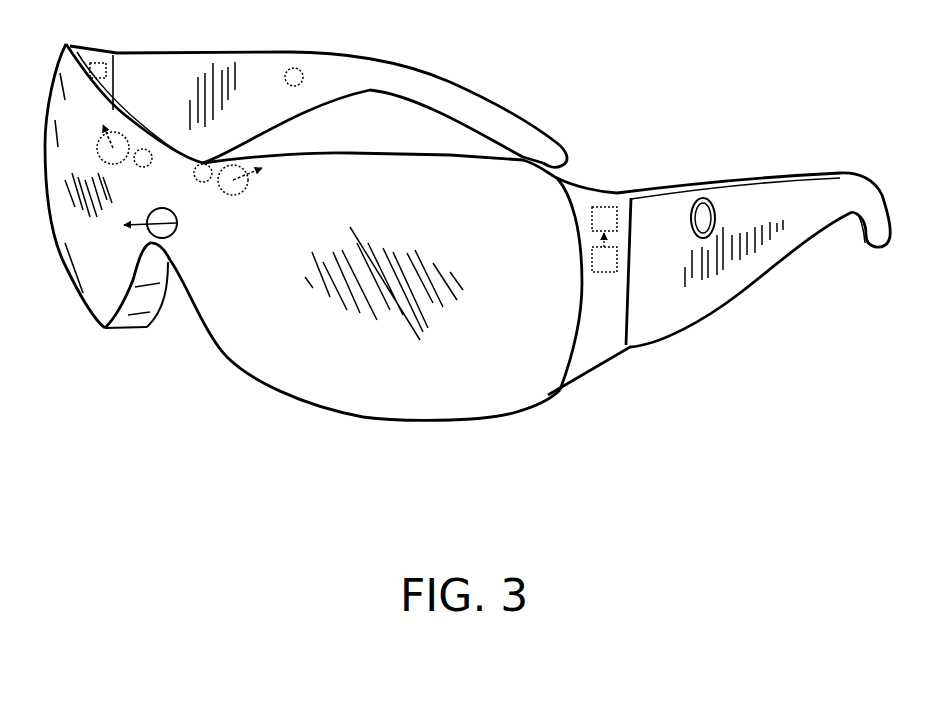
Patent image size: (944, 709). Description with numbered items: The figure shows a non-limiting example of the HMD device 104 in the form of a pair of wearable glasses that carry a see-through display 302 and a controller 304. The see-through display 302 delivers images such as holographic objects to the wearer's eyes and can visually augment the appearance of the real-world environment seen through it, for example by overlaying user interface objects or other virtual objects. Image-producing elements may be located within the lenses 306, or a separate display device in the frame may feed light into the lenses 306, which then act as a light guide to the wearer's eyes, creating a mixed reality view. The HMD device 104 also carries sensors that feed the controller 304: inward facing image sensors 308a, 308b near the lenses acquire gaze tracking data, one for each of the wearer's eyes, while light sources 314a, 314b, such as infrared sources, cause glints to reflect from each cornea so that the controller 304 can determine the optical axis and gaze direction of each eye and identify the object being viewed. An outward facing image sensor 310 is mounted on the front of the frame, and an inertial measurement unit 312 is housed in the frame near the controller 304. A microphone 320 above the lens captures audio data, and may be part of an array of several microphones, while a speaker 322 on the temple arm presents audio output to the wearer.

The HMD device 104 is at (506, 40).
The see-through display 302 is at (260, 355).
The controller 304 is at (605, 205).
The lenses 306 is at (138, 300).
The inward facing image sensor 308a is at (241, 194).
The inward facing image sensor 308b is at (119, 161).
The outward facing image sensor 310 is at (177, 223).
The inertial measurement unit 312 is at (617, 258).
The light source 314a is at (203, 163).
The light source 314b is at (145, 149).
The microphone 320 is at (99, 62).
The speaker 322 is at (295, 67).